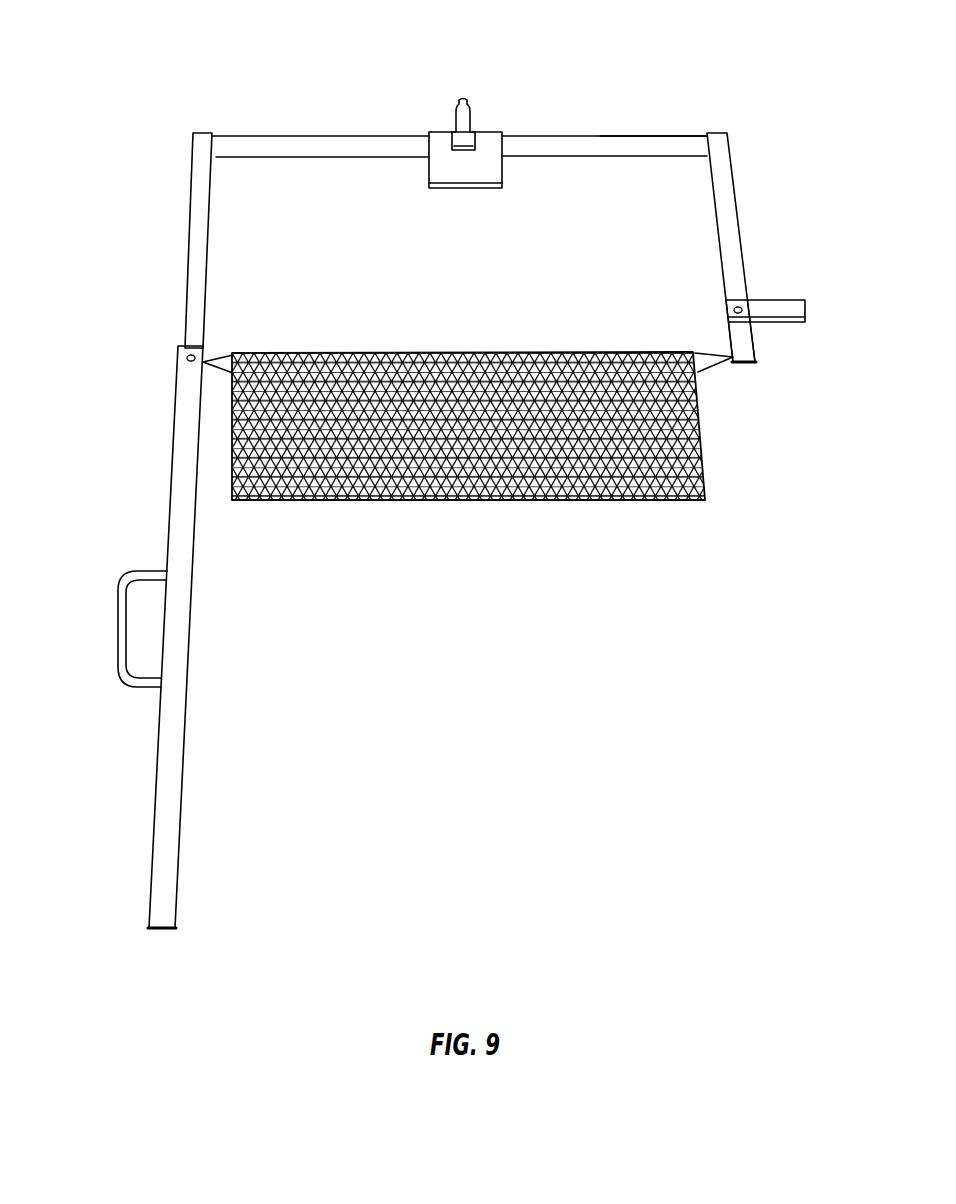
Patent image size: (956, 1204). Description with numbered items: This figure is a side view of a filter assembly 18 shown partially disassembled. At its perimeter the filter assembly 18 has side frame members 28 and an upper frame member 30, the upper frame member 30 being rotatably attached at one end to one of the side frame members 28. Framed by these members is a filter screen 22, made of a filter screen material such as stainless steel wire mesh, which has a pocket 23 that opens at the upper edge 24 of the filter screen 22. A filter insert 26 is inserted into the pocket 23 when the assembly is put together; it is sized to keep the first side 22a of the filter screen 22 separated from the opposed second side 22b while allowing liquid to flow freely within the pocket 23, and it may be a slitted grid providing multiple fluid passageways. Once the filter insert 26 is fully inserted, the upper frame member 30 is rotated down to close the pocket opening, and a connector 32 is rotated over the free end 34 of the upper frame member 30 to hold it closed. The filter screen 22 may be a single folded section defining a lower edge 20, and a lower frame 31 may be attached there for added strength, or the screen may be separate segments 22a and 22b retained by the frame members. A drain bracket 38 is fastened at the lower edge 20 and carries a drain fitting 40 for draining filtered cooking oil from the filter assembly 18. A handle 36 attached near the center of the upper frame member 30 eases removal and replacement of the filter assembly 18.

The filter assembly 18 is at (152, 50).
The lower edge 20 is at (605, 135).
The filter screen 22 is at (333, 175).
The first side 22a is at (703, 308).
The second side 22b is at (700, 372).
The pocket 23 is at (736, 357).
The upper edge 24 is at (222, 358).
The filter insert 26 is at (476, 504).
The side frame members 28 is at (200, 135).
The upper frame member 30 is at (172, 498).
The lower frame 31 is at (667, 143).
The connector 32 is at (802, 300).
The free end 34 is at (162, 931).
The handle 36 is at (117, 628).
The drain bracket 38 is at (482, 160).
The drain fitting 40 is at (462, 104).